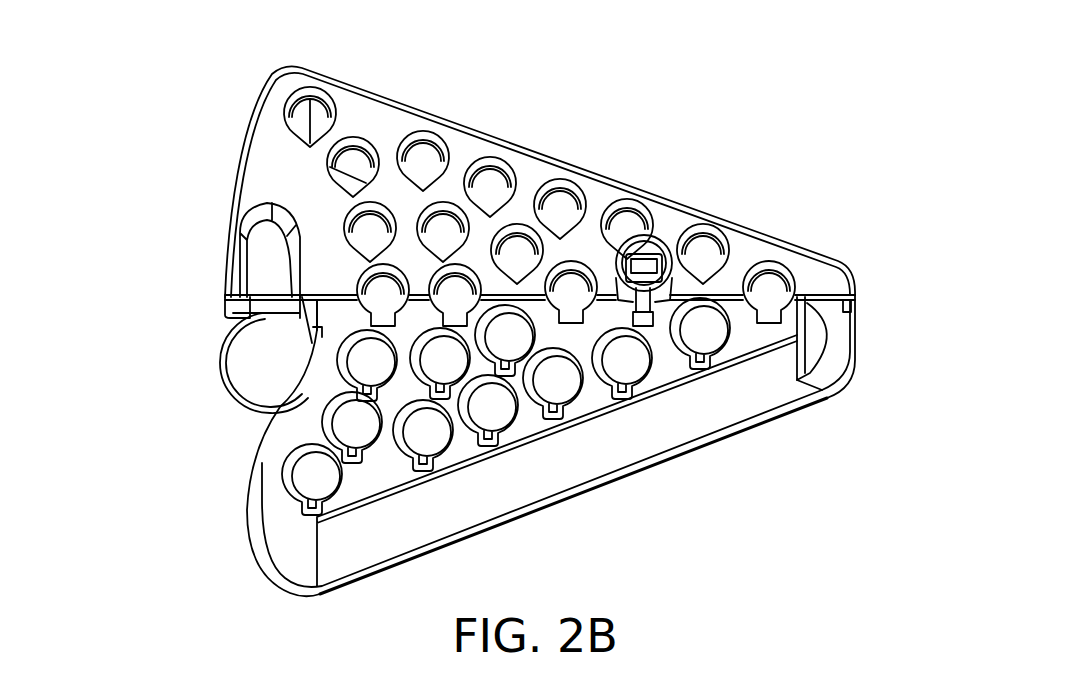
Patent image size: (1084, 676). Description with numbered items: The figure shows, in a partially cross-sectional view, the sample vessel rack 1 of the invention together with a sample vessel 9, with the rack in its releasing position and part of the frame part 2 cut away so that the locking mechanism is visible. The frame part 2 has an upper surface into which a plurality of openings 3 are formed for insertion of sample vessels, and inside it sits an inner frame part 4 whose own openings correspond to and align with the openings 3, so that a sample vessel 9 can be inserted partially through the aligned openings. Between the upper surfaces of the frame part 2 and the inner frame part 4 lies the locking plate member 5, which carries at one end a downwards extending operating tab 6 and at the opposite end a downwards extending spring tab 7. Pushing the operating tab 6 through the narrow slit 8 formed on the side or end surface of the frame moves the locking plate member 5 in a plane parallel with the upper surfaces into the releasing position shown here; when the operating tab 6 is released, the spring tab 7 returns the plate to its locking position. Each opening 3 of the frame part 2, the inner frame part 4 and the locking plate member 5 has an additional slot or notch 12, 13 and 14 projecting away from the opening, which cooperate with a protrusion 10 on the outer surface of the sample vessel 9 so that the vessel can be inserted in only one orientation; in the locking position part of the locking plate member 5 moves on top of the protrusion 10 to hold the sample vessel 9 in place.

The sample vessel rack 1 is at (171, 158).
The frame part 2 is at (280, 155).
The openings 3 is at (624, 221).
The inner frame part 4 is at (767, 397).
The locking plate member 5 is at (530, 415).
The operating tab 6 is at (803, 337).
The spring tab 7 is at (327, 330).
The narrow slit 8 is at (850, 307).
The sample vessel 9 is at (668, 305).
The protrusion 10 is at (640, 310).
The slot or notch 12 is at (777, 262).
The slot or notch 13 is at (774, 234).
The slot or notch 14 is at (789, 240).